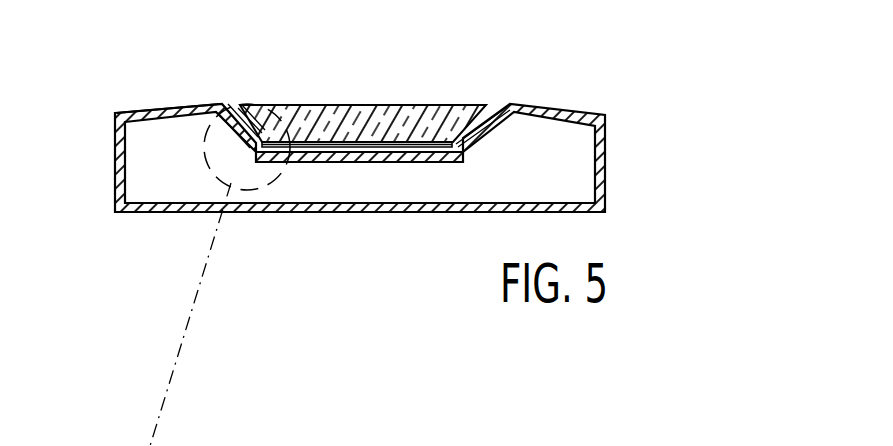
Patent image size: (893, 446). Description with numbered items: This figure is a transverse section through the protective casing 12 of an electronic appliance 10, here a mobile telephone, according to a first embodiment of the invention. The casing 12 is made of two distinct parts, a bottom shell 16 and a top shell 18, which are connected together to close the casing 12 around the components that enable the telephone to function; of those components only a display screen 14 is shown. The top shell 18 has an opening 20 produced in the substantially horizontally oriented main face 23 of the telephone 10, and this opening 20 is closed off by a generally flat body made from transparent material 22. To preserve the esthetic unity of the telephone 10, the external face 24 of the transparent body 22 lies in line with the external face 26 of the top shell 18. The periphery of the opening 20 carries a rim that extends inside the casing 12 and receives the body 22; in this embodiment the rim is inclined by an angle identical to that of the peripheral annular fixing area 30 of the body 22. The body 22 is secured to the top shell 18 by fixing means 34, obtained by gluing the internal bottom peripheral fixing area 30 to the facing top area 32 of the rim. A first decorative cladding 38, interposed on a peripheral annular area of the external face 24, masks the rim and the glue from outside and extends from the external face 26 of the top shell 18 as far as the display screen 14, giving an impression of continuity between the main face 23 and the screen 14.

The electronic appliance 10 is at (478, 46).
The protective casing 12 is at (593, 109).
The display screen 14 is at (383, 163).
The bottom shell 16 is at (605, 183).
The top shell 18 is at (605, 138).
The opening 20 is at (322, 148).
The body made from transparent material 22 is at (342, 125).
The main face 23 is at (155, 108).
The external face of the transparent body 24 is at (387, 107).
The external face of the top shell 26 is at (525, 108).
The peripheral annular fixing area 30 is at (242, 99).
The top area of the rim 32 is at (220, 125).
The fixing means 34 is at (272, 105).
The first decorative cladding 38 is at (283, 107).